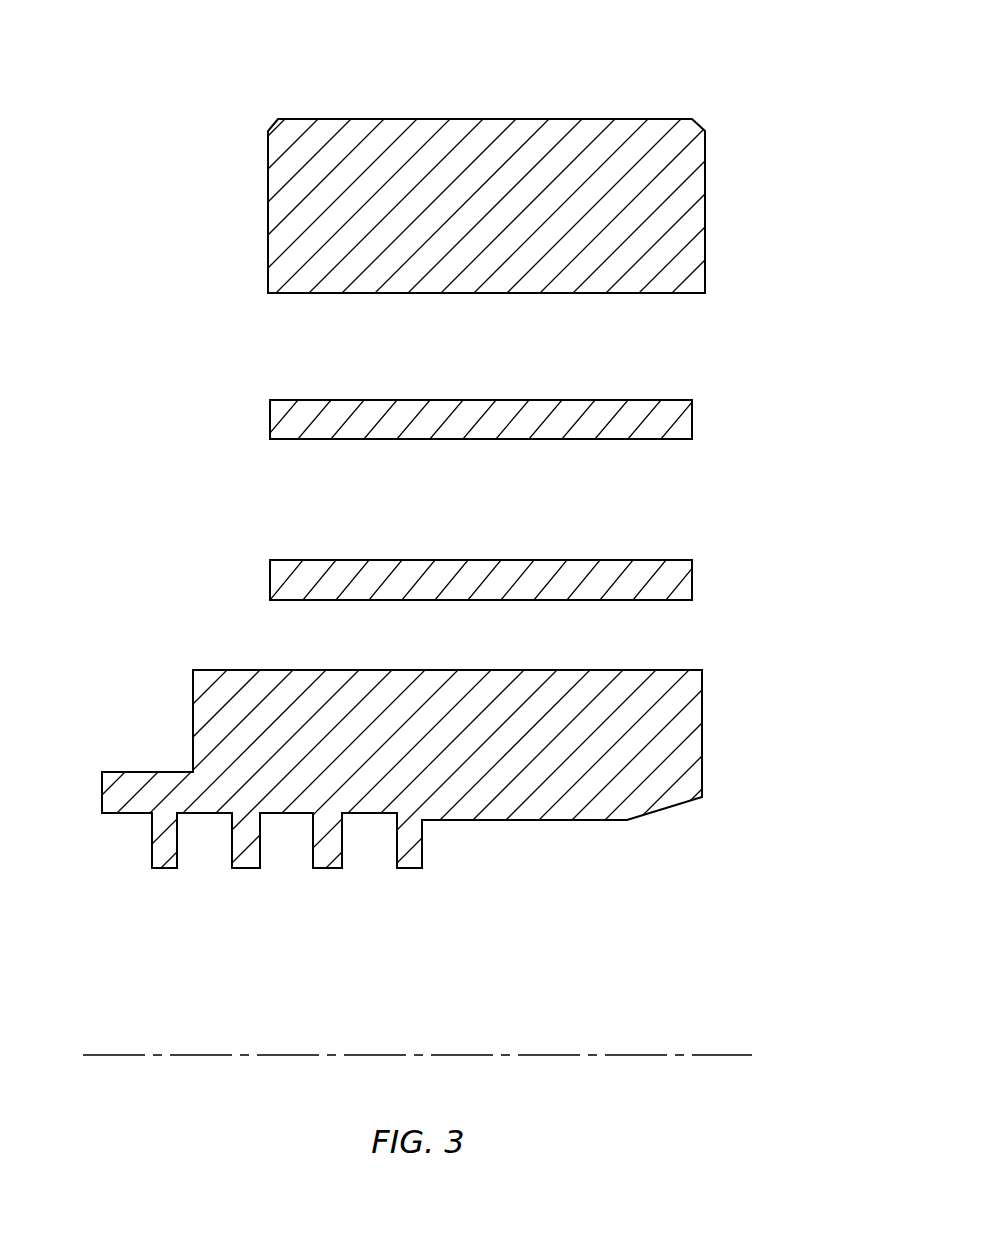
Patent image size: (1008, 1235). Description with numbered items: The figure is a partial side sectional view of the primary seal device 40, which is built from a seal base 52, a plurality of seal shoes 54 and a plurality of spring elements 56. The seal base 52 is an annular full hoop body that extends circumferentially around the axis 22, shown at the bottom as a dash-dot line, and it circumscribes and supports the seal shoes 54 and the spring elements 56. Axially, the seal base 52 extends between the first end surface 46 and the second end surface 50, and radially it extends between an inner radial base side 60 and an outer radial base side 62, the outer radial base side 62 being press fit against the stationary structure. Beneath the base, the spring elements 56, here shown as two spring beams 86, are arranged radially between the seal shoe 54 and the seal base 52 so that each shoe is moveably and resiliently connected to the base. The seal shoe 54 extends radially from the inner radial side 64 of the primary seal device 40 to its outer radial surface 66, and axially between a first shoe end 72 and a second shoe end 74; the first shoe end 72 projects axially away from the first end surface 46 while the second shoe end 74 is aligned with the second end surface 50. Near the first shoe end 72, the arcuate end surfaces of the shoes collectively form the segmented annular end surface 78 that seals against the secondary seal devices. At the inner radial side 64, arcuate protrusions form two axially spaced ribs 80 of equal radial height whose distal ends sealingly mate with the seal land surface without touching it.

The axis 22 is at (723, 1055).
The primary seal device 40 is at (697, 72).
The first end surface 46 is at (268, 203).
The second end surface 50 is at (705, 200).
The seal base 52 is at (590, 108).
The seal shoe 54 is at (712, 737).
The spring element 56 is at (475, 499).
The inner radial base side 60 is at (436, 293).
The outer radial base side 62 is at (452, 118).
The inner radial side 64 is at (458, 874).
The outer radial surface 66 is at (408, 670).
The first shoe end 72 is at (102, 790).
The second shoe end 74 is at (703, 766).
The end surface 78 is at (130, 721).
The rib 80 is at (163, 868).
The spring beam 86 is at (270, 420).